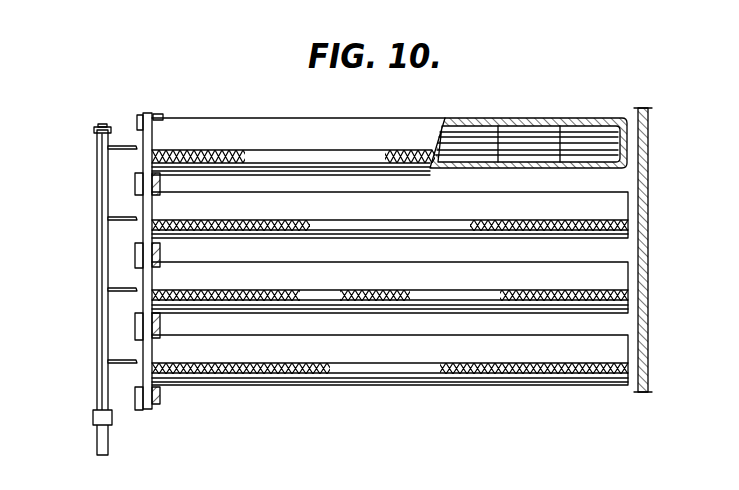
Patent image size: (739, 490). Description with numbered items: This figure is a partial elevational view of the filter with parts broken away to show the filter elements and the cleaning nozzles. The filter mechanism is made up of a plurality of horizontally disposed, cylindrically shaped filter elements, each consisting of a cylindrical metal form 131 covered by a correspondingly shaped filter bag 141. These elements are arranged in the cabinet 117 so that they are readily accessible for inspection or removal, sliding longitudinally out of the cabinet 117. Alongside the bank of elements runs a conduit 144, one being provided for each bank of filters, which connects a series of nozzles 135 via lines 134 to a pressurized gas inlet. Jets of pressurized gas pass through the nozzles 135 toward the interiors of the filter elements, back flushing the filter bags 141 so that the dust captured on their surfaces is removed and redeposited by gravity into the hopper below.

The cabinet 117 is at (648, 216).
The cylindrical metal form 131 is at (628, 124).
The lines 134 is at (109, 439).
The nozzles 135 is at (132, 149).
The filter bag 141 is at (173, 128).
The conduits 144 is at (103, 390).